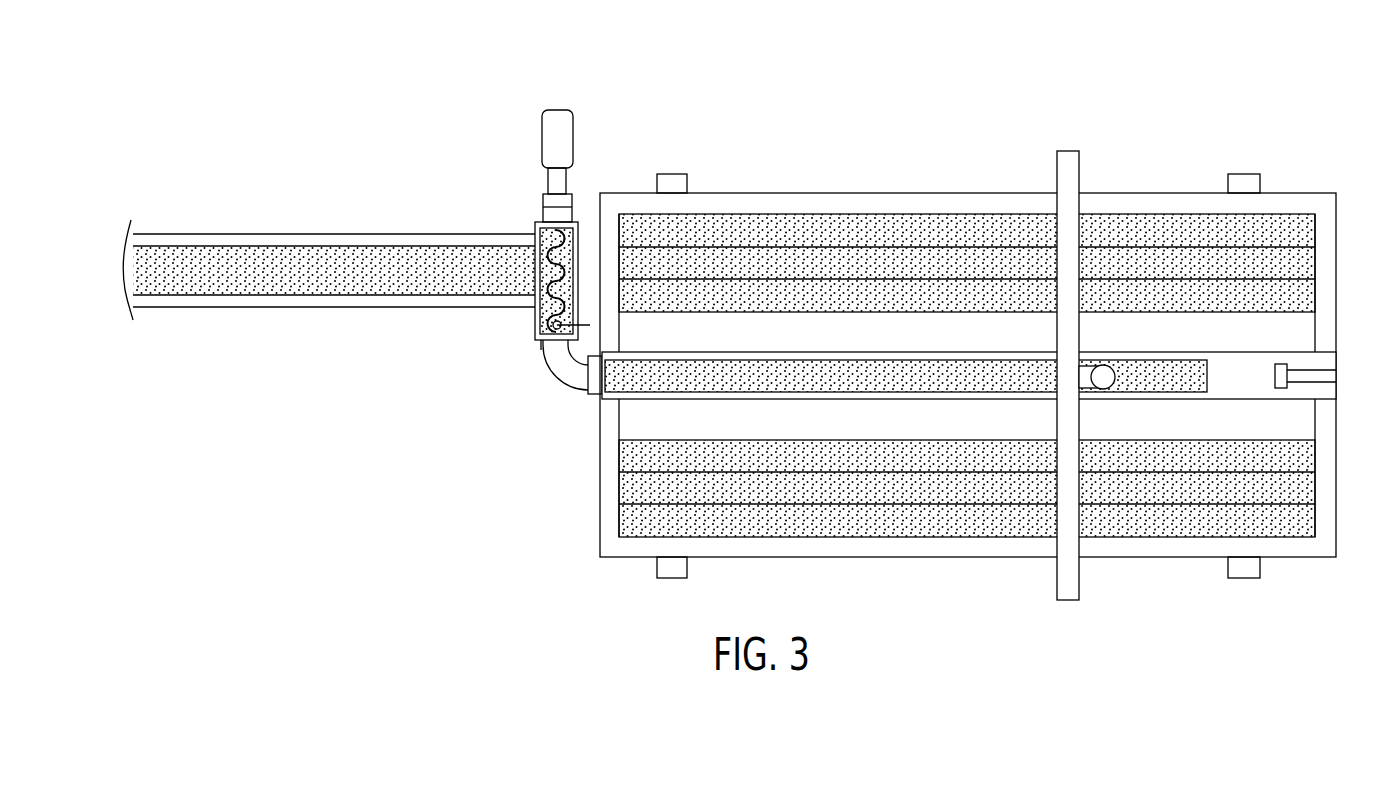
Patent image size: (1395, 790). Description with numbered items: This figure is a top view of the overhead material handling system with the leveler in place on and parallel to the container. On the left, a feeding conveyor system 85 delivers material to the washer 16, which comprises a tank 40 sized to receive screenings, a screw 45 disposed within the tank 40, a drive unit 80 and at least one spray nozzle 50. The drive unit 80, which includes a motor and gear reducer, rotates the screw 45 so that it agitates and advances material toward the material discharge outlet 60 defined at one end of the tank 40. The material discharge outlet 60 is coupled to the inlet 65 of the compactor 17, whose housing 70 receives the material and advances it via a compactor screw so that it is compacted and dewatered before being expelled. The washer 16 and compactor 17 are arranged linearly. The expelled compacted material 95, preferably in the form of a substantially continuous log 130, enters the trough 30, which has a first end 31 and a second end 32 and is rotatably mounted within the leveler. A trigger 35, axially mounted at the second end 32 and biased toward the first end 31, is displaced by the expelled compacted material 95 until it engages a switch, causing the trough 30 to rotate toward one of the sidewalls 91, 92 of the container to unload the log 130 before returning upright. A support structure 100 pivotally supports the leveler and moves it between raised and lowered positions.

The washer 16 is at (561, 161).
The compactor 17 is at (565, 324).
The trough 30 is at (805, 352).
The first end 31 is at (632, 346).
The second end 32 is at (1276, 334).
The trigger 35 is at (1282, 362).
The tank 40 is at (538, 222).
The screw 45 is at (583, 240).
The spray nozzle 50 is at (563, 336).
The material discharge outlet 60 is at (552, 343).
The inlet 65 is at (541, 350).
The housing 70 is at (557, 374).
The drive unit 80 is at (575, 122).
The feeding conveyor system 85 is at (353, 234).
The sidewall 91 is at (1000, 558).
The sidewall 92 is at (903, 193).
The expelled compacted material 95 is at (742, 370).
The support structure 100 is at (1069, 132).
The log 130 is at (1145, 295).